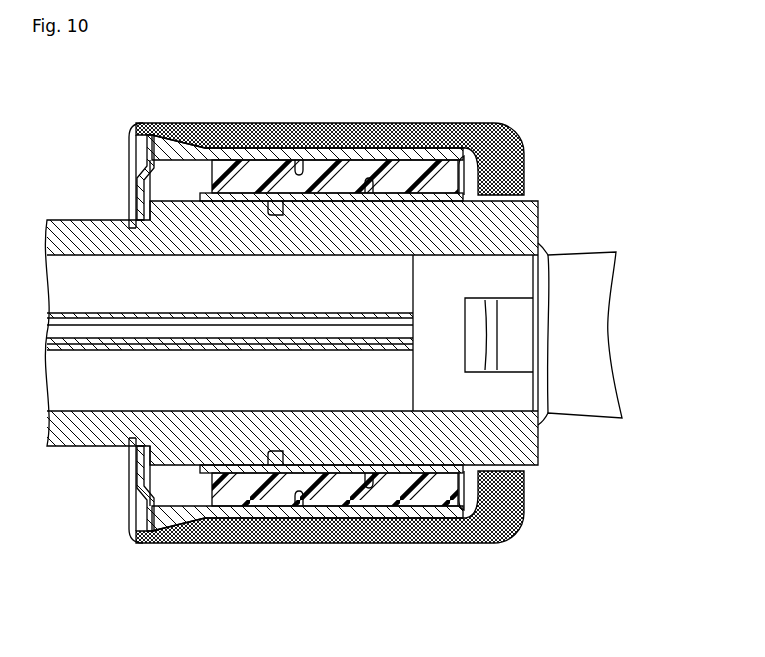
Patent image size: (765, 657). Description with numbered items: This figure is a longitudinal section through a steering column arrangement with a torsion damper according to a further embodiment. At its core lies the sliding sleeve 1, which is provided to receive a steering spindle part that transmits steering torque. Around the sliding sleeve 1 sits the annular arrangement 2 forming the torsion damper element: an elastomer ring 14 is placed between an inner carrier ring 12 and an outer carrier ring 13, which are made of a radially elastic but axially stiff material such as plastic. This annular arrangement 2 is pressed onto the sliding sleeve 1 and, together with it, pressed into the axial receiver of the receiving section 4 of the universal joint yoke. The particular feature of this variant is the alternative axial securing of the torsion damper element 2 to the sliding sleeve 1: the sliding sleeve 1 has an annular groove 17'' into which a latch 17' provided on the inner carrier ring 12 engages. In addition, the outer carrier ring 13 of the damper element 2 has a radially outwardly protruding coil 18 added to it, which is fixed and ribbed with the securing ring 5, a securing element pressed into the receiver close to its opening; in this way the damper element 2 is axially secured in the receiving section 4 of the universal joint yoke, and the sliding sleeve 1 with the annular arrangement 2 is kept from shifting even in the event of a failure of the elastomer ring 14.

The sliding sleeve 1 is at (80, 450).
The annular arrangement 2 is at (343, 514).
The receiving section 4 is at (410, 545).
The securing ring 5 is at (128, 512).
The inner carrier ring 12 is at (438, 140).
The outer carrier ring 13 is at (330, 140).
The elastomer ring 14 is at (388, 140).
The latch 17' is at (320, 225).
The annular groove 17'' is at (317, 437).
The coil 18 is at (170, 545).